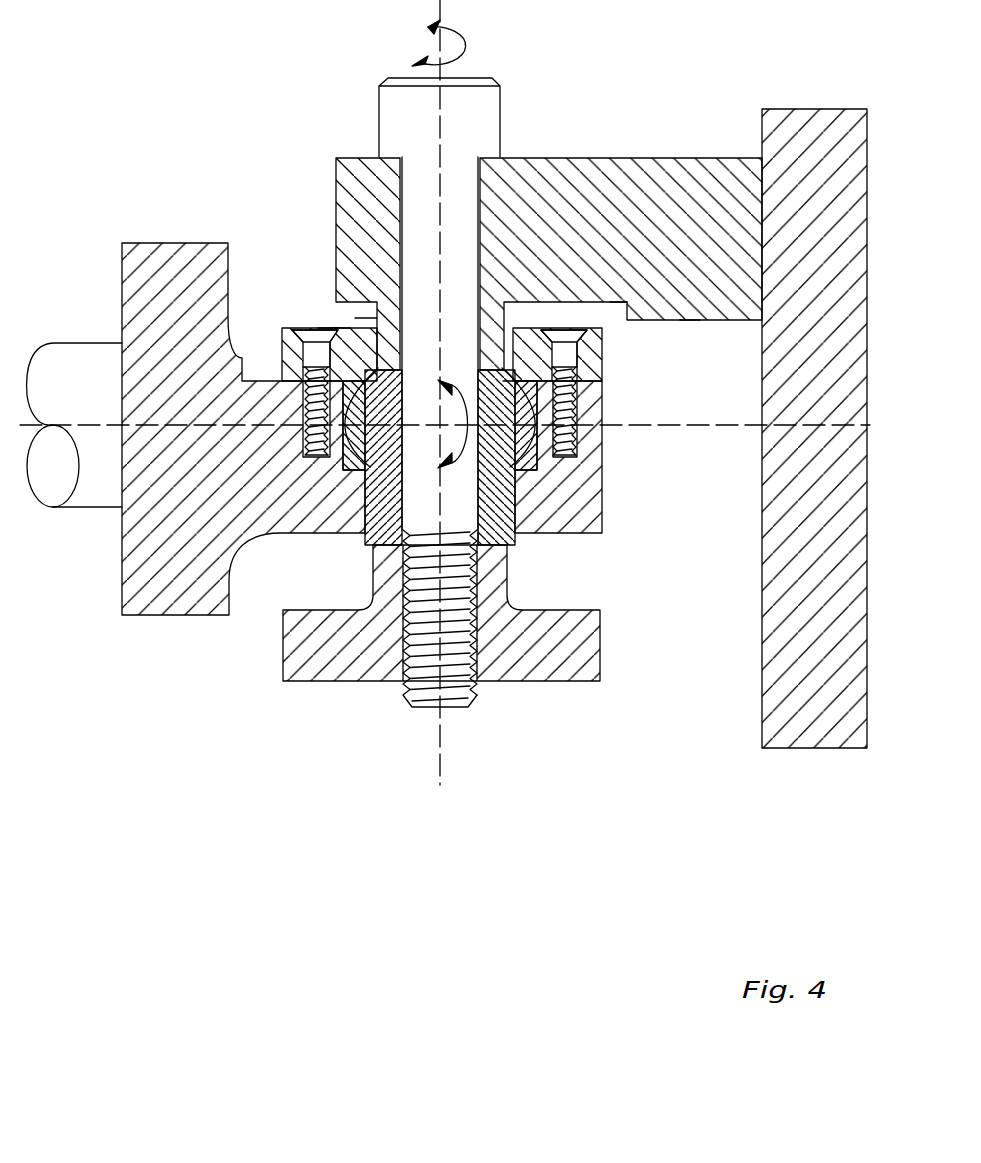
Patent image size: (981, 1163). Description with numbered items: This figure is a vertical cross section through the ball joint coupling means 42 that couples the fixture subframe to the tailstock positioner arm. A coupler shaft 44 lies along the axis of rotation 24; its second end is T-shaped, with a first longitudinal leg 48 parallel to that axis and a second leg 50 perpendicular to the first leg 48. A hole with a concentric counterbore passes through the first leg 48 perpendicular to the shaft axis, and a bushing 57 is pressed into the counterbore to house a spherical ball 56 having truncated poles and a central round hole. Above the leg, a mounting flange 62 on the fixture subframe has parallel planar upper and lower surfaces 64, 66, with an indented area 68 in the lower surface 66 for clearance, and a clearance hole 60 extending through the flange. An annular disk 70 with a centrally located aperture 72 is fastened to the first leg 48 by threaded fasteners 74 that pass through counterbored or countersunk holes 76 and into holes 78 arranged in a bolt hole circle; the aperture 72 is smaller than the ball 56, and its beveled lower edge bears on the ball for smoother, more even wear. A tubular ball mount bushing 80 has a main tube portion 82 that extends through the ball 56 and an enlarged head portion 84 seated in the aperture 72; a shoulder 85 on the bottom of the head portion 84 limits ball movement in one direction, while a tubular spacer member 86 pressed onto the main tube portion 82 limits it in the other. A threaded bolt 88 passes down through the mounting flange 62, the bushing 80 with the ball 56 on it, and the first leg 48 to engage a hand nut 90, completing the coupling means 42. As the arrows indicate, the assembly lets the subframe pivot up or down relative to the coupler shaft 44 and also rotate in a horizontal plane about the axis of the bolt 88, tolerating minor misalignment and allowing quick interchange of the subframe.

The axis of rotation 24 is at (690, 426).
The ball joint coupling means 42 is at (283, 83).
The coupler shaft 44 is at (50, 340).
The first longitudinal leg 48 is at (602, 485).
The second leg 50 is at (180, 615).
The ball 56 is at (515, 485).
The bushing 57 is at (522, 475).
The clearance hole 60 is at (478, 195).
The mounting flange 62 is at (336, 192).
The upper surface 64 is at (603, 158).
The lower surface 66 is at (690, 322).
The indented area 68 is at (612, 305).
The annular disk 70 is at (290, 328).
The aperture 72 is at (510, 345).
The threaded fasteners 74 is at (320, 328).
The counterbored or countersunk holes 76 is at (335, 328).
The holes 78 is at (303, 435).
The tubular ball mount bushing 80 is at (367, 318).
The main tube portion 82 is at (485, 535).
The enlarged head portion 84 is at (503, 318).
The shoulder 85 is at (350, 472).
The tubular spacer member 86 is at (372, 540).
The threaded bolt 88 is at (470, 78).
The hand nut 90 is at (530, 681).